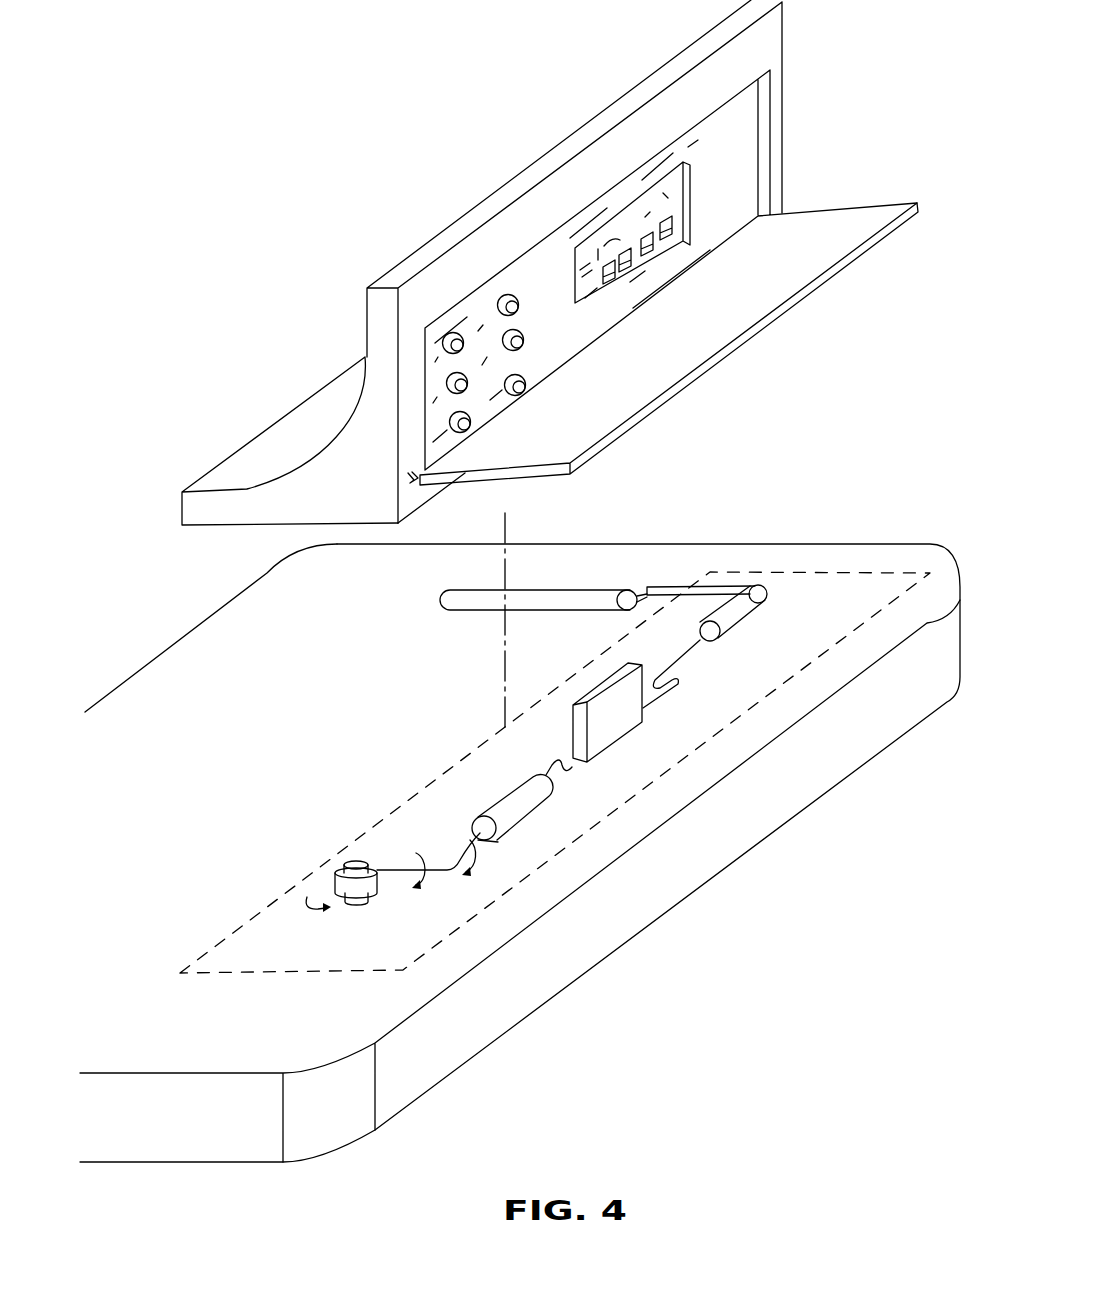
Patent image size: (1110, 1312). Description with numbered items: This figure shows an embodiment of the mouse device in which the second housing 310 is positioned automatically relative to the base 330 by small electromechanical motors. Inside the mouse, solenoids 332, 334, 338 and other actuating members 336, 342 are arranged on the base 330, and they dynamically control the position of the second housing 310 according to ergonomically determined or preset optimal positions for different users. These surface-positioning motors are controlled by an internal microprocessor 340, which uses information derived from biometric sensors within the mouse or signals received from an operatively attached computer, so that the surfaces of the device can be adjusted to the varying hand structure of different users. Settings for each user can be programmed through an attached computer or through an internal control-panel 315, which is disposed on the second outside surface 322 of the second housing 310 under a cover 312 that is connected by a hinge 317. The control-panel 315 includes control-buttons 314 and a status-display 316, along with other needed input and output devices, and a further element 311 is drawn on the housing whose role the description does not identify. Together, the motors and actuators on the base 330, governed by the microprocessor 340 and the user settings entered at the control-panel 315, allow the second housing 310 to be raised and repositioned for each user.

The second housing 310 is at (540, 99).
The front panel 311 is at (750, 140).
The cover 312 is at (684, 348).
The control-buttons 314 is at (518, 288).
The internal control-panel 315 is at (750, 166).
The status-display 316 is at (683, 155).
The hinge 317 is at (415, 483).
The second outside surface 322 is at (777, 30).
The base 330 is at (152, 863).
The solenoid 332 is at (502, 802).
The solenoid 334 is at (742, 611).
The actuating member 336 is at (357, 903).
The solenoid 338 is at (580, 598).
The internal microprocessor 340 is at (620, 718).
The actuating member 342 is at (333, 882).